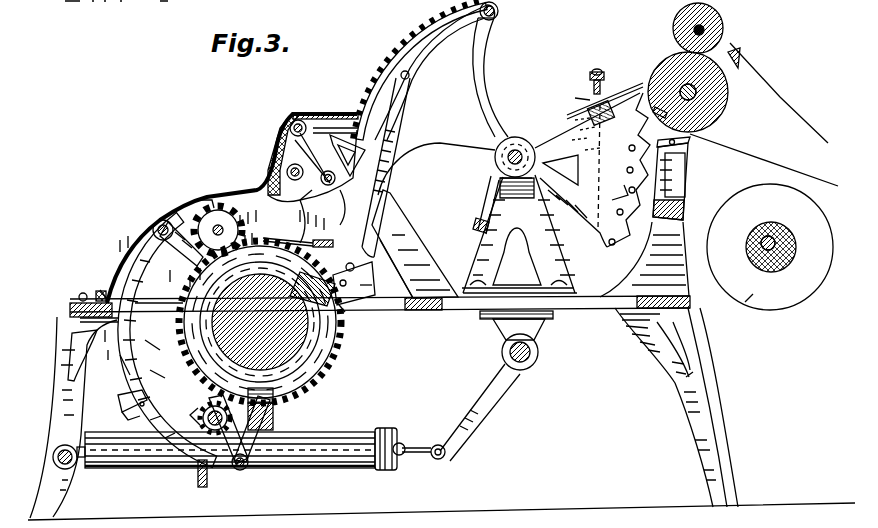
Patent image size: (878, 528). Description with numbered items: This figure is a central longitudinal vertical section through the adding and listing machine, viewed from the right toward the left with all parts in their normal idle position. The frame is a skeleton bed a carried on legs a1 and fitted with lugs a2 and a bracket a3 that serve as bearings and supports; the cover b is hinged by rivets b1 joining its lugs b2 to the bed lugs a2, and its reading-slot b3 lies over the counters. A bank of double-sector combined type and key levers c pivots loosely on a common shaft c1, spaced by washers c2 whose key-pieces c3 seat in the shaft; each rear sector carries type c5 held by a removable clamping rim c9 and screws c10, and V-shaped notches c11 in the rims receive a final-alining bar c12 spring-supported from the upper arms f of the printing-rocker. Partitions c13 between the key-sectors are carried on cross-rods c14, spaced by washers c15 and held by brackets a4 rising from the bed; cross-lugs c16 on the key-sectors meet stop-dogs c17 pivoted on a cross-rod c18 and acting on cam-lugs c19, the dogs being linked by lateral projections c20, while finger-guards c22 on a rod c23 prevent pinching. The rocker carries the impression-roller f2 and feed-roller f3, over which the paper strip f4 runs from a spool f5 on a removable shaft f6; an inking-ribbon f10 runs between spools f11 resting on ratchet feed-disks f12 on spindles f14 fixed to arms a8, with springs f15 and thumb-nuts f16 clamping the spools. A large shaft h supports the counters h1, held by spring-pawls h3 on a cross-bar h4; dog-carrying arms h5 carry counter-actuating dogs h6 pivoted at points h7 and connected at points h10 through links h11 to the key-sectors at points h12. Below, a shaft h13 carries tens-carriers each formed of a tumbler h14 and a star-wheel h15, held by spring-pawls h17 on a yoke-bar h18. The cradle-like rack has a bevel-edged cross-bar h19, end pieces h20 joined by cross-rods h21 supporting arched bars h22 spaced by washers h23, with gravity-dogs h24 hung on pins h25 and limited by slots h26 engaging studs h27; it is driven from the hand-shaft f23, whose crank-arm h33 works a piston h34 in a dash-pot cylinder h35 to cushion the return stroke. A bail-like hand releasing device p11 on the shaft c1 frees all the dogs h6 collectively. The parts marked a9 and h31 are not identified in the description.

The skeleton bed a is at (580, 301).
The legs a1 is at (67, 404).
The bed lugs a2 is at (530, 240).
The frame bracket a3 is at (672, 275).
The brackets a4 is at (418, 62).
The spindle arms a8 is at (616, 195).
The bracket under table a9 is at (531, 334).
The cover b is at (152, 224).
The hinge bolts b1 is at (83, 293).
The cover lugs b2 is at (101, 290).
The reading-slot b3 is at (210, 200).
The combined type and key levers c is at (567, 143).
The lever shaft c1 is at (509, 162).
The spacing-washers c2 is at (587, 170).
The key-pieces c3 is at (514, 168).
The type c5 is at (616, 244).
The clamping flange c9 is at (640, 162).
The clamping screws c10 is at (628, 180).
The V-shaped notches c11 is at (611, 202).
The final-alining bar c12 is at (690, 160).
The partitions c13 is at (490, 24).
The cross-rods c14 is at (498, 13).
The partition spacing-washers c15 is at (498, 7).
The cross-lugs c16 is at (404, 41).
The stop-dogs c17 is at (283, 136).
The stop-dog rod c18 is at (287, 172).
The cam-lugs c19 is at (358, 135).
The lateral projections c20 is at (333, 113).
The finger-guards c22 is at (305, 118).
The finger-guard rod c23 is at (297, 118).
The upper arms of printing-rocker f is at (682, 187).
The impression-roller f2 is at (656, 80).
The feed-roller f3 is at (678, 21).
The paper strip f4 is at (777, 102).
The spool f5 is at (780, 230).
The spool shaft f6 is at (747, 303).
The inking-ribbon f10 is at (640, 87).
The ribbon spools f11 is at (592, 108).
The ratchet feed-disks f12 is at (715, 122).
The spindles f14 is at (592, 74).
The springs f15 is at (590, 100).
The thumb-nuts f16 is at (600, 74).
The hand-shaft f23 is at (502, 352).
The hand releasing device p11 is at (478, 223).
The counter shaft h is at (167, 340).
The counters h1 is at (336, 333).
The counter spring-pawls h3 is at (279, 237).
The pawl cross-bar h4 is at (370, 266).
The dog-carrying arms h5 is at (345, 306).
The counter-actuating dogs h6 is at (374, 288).
The dog pivot points h7 is at (375, 303).
The link connection points h10 is at (385, 241).
The links h11 is at (394, 187).
The key-sector pivot points h12 is at (411, 80).
The carrier shaft h13 is at (203, 414).
The tumbler h14 is at (189, 417).
The star-wheel h15 is at (273, 418).
The carrier spring-pawls h17 is at (197, 471).
The yoke-bar h18 is at (208, 478).
The bevel-edged cross-bar h19 is at (293, 417).
The cradle end pieces h20 is at (175, 258).
The end cross-rods h21 is at (153, 228).
The pinion h31 is at (222, 222).
The arched bars h22 is at (120, 356).
The cradle washers h23 is at (166, 220).
The gravity-dogs h24 is at (122, 411).
The gravity-dog pins h25 is at (150, 345).
The gravity-dog slots h26 is at (127, 410).
The lateral studs h27 is at (155, 372).
The crank-arm h33 is at (482, 431).
The piston h34 is at (440, 445).
The cylinder h35 is at (335, 470).